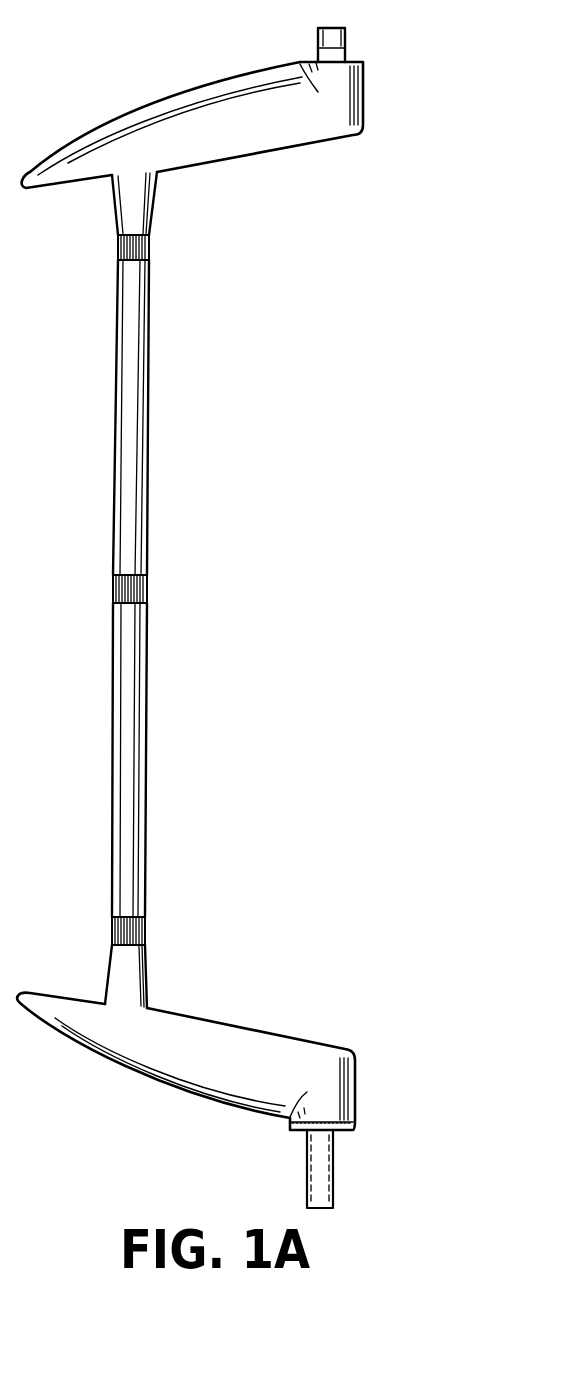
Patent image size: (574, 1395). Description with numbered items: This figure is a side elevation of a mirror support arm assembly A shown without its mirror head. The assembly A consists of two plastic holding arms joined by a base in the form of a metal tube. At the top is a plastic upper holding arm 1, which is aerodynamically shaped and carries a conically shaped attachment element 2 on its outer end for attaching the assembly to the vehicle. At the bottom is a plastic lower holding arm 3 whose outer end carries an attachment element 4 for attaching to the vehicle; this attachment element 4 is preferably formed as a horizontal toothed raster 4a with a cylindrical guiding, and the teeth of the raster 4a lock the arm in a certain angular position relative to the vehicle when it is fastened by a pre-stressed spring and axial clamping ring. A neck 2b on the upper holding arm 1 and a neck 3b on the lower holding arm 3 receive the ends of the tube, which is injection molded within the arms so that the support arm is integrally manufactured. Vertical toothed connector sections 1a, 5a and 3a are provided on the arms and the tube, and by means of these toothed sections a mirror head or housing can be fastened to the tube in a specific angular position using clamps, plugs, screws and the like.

The upper holding arm 1 is at (222, 84).
The attachment element 2 is at (347, 57).
The neck 2b is at (135, 192).
The vertical toothed connector section 1a is at (148, 245).
The mirror support arm assembly A is at (240, 677).
The vertical toothed connector section 5a is at (145, 597).
The lower joint band 3a is at (142, 930).
The neck 3b is at (146, 987).
The lower holding arm 3 is at (170, 1087).
The horizontal toothed raster 4a is at (293, 1130).
The attachment element 4 is at (318, 1168).